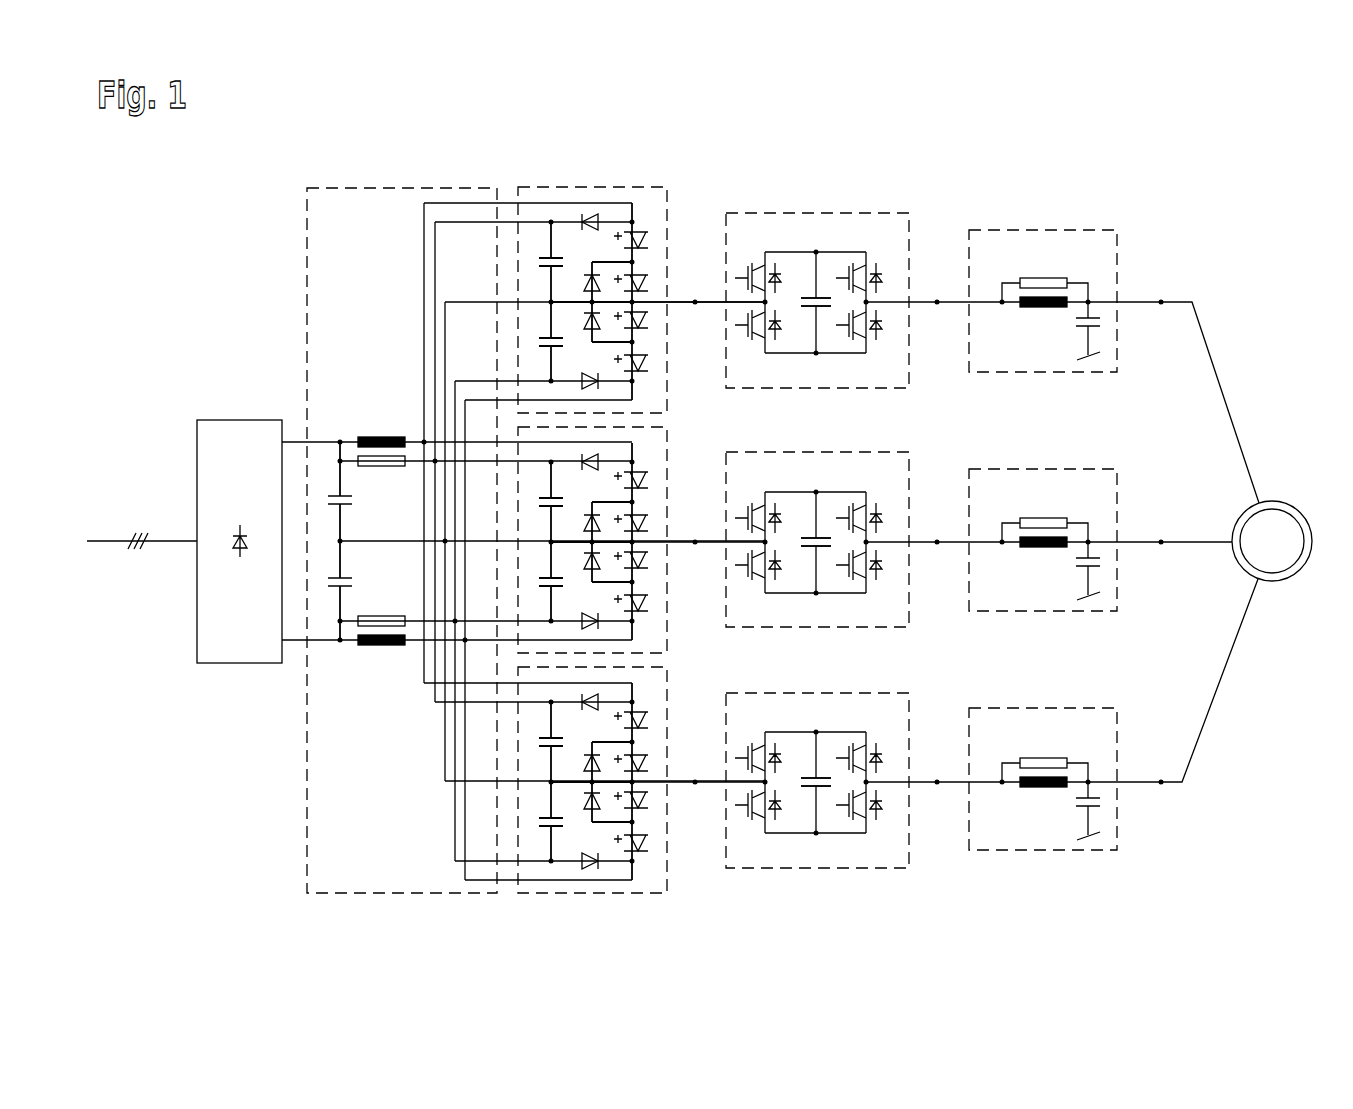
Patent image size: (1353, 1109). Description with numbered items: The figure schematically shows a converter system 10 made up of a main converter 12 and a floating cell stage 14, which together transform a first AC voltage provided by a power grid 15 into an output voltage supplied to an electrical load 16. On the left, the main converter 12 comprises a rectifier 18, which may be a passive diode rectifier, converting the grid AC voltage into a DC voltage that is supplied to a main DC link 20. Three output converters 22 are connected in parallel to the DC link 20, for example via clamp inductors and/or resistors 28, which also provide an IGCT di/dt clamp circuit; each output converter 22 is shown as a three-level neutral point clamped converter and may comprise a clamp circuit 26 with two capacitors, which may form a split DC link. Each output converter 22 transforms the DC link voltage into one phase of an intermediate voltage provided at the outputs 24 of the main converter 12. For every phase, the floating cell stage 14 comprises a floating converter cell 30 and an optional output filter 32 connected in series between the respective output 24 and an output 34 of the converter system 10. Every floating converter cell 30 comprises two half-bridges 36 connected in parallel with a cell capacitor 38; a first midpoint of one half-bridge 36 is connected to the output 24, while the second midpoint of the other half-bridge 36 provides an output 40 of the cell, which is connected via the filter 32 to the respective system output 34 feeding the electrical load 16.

The converter system 10 is at (1182, 178).
The main converter 12 is at (236, 202).
The floating cell stage 14 is at (943, 188).
The power grid 15 is at (103, 536).
The electrical load 16 is at (1284, 502).
The rectifier 18 is at (238, 665).
The main DC link 20 is at (355, 188).
The output converter 22 is at (598, 187).
The output of the main converter 24 is at (695, 296).
The clamp circuit 26 is at (528, 275).
The clamp inductors and/or resistors 28 is at (379, 416).
The floating converter cell 30 is at (815, 213).
The output filter 32 is at (1035, 230).
The output of the converter system 34 is at (1160, 296).
The half-bridge 36 is at (749, 234).
The cell capacitor 38 is at (839, 234).
The output of the floating converter cell 40 is at (937, 296).